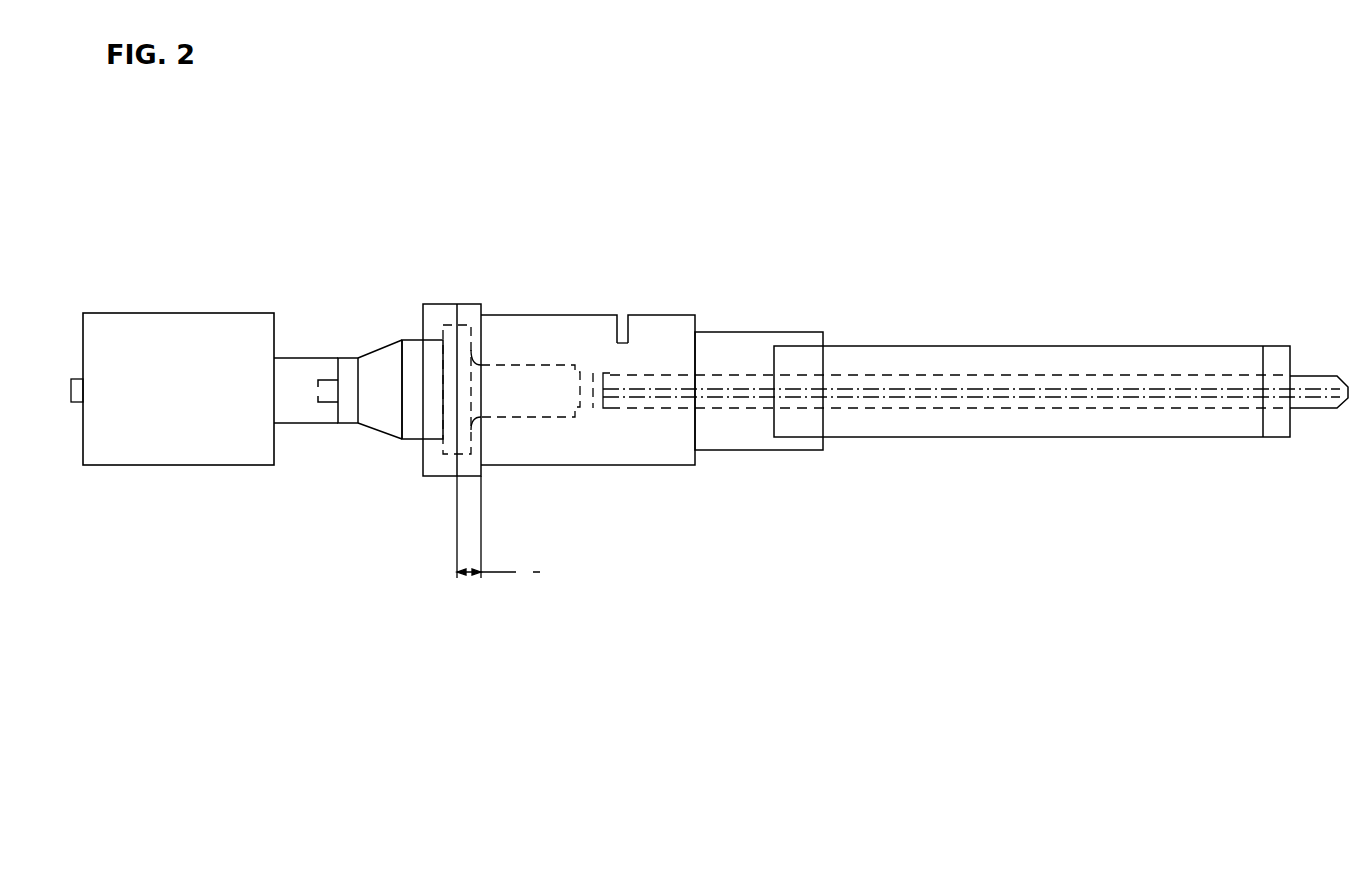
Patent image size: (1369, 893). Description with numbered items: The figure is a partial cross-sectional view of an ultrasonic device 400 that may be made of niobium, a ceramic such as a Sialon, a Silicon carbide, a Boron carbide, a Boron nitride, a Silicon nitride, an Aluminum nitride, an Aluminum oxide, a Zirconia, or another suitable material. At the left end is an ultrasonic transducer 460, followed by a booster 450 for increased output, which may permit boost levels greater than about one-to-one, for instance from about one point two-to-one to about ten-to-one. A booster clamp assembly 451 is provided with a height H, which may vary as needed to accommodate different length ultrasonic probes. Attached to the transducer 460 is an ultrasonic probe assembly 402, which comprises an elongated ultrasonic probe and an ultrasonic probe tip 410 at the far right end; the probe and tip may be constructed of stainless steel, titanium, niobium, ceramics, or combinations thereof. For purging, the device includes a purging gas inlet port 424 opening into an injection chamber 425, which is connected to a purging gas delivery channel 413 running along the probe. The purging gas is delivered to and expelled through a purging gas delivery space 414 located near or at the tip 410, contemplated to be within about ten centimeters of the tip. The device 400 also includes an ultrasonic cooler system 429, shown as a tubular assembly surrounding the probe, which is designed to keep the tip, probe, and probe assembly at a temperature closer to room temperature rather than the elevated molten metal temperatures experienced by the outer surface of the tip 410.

The ultrasonic device 400 is at (765, 147).
The ultrasonic transducer 460 is at (182, 313).
The booster 450 is at (360, 357).
The booster clamp assembly 451 is at (483, 478).
The height H is at (498, 572).
The injection chamber 425 is at (590, 467).
The purging gas inlet port 424 is at (629, 316).
The ultrasonic probe assembly 402 is at (673, 372).
The purging gas delivery channel 413 is at (973, 388).
The ultrasonic cooler system 429 is at (1020, 440).
The purging gas delivery space 414 is at (1294, 411).
The ultrasonic probe tip 410 is at (1334, 373).